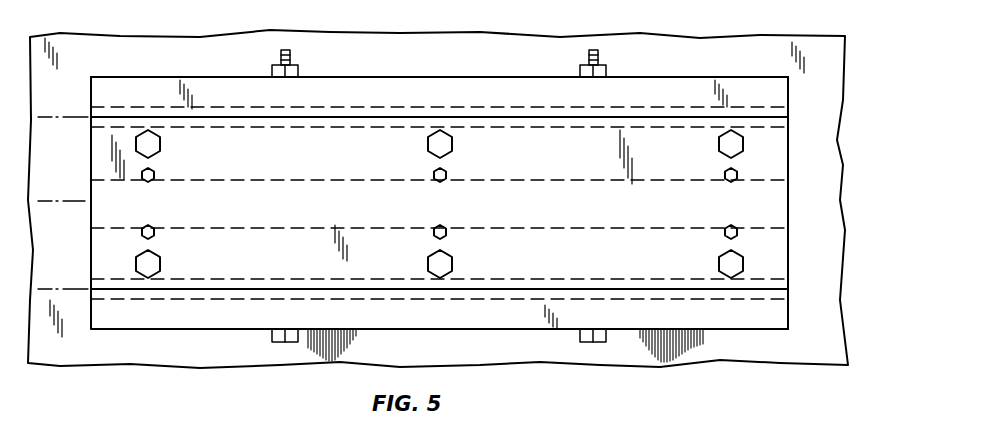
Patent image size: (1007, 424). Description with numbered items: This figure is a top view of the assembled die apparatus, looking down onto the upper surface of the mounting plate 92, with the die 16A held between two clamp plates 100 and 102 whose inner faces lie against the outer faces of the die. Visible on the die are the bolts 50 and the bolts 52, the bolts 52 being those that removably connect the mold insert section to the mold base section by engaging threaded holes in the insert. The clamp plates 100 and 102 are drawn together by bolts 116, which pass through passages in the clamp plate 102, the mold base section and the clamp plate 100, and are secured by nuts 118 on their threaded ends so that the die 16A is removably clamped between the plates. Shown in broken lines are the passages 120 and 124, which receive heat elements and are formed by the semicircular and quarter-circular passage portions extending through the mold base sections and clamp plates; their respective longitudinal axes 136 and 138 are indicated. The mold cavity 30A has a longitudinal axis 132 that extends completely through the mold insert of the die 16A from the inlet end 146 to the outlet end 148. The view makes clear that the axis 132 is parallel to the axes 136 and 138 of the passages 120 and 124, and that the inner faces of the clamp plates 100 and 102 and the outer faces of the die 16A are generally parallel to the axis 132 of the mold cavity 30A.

The mounting plate 92 is at (566, 40).
The clamp plate 100 is at (413, 322).
The clamp plate 102 is at (500, 85).
The nut 118 is at (300, 68).
The bolt 116 is at (272, 336).
The passage 120 is at (792, 107).
The passage 124 is at (792, 286).
The mold cavity 30A is at (791, 192).
The outlet end 148 is at (791, 210).
The die 16A is at (796, 252).
The longitudinal axis 136 is at (51, 117).
The longitudinal axis 132 is at (51, 201).
The longitudinal axis 138 is at (51, 289).
The inlet end 146 is at (91, 218).
The bolts 50 is at (161, 142).
The bolts 52 is at (155, 172).